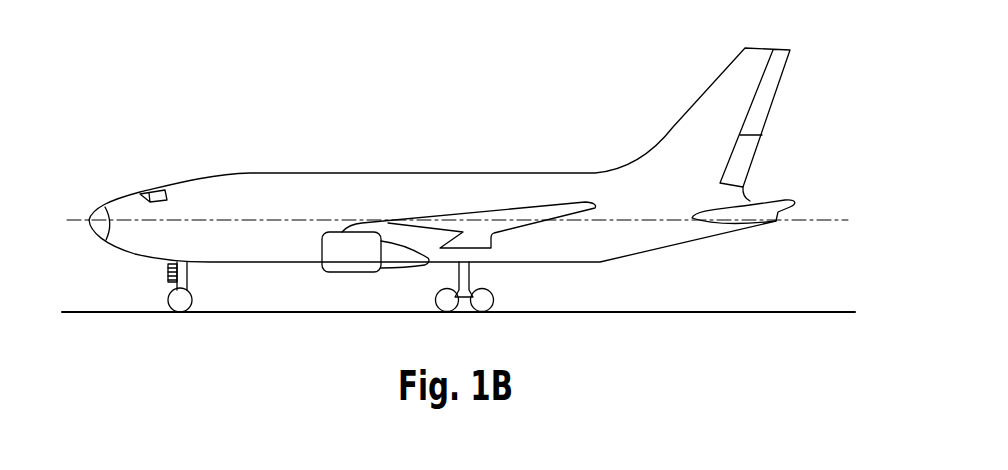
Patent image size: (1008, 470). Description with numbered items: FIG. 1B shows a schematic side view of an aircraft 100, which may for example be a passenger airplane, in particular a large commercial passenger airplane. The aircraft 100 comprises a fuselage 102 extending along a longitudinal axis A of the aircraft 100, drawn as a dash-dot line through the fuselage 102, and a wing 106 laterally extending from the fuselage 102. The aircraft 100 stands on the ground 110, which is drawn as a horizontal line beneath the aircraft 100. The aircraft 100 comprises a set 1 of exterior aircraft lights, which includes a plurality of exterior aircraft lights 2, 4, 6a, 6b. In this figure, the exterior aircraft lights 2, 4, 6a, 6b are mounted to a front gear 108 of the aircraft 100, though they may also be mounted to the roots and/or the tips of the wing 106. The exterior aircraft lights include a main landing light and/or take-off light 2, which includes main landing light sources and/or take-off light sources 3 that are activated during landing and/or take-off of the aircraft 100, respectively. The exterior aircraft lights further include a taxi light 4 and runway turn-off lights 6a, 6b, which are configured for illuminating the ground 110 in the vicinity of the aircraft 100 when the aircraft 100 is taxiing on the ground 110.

The aircraft 100 is at (208, 122).
The fuselage 102 is at (352, 193).
The wing 106 is at (513, 226).
The front gear 108 is at (217, 294).
The ground 110 is at (94, 314).
The set of exterior aircraft lights 1 is at (117, 282).
The main landing light and/or take-off light 2 is at (152, 266).
The main landing light source and/or take-off light source 3 is at (186, 262).
The taxi light 4 is at (165, 274).
The runway turn-off light 6a is at (167, 326).
The runway turn-off light 6b is at (170, 290).
The longitudinal axis A is at (70, 218).